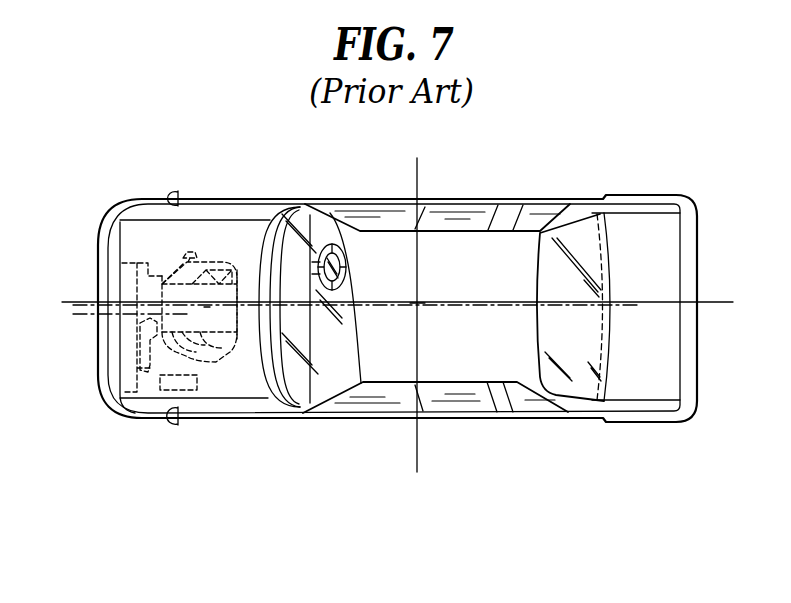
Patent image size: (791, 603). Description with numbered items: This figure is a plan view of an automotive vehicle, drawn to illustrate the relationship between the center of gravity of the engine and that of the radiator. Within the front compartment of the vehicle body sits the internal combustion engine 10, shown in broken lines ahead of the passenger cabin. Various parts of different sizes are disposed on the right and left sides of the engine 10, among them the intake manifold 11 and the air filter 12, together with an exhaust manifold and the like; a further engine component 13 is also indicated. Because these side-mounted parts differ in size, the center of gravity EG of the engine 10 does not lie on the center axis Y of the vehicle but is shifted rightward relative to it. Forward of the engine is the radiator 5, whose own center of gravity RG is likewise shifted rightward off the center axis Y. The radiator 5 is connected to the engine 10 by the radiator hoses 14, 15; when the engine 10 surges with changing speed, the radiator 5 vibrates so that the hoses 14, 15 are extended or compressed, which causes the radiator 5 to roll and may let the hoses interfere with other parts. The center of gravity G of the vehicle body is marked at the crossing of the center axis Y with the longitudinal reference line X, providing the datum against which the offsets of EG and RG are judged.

The radiator 5 is at (130, 372).
The internal combustion engine 10 is at (240, 317).
The intake manifold 11 is at (215, 356).
The air filter 12 is at (187, 390).
The engine block 13 is at (219, 262).
The radiator hose 14 is at (158, 272).
The radiator hose 15 is at (152, 350).
The center of gravity of the engine EG is at (207, 308).
The center of gravity of the radiator RG is at (130, 318).
The center of gravity of the vehicle body G is at (418, 303).
The longitudinal axis X is at (419, 324).
The center axis Y is at (386, 302).